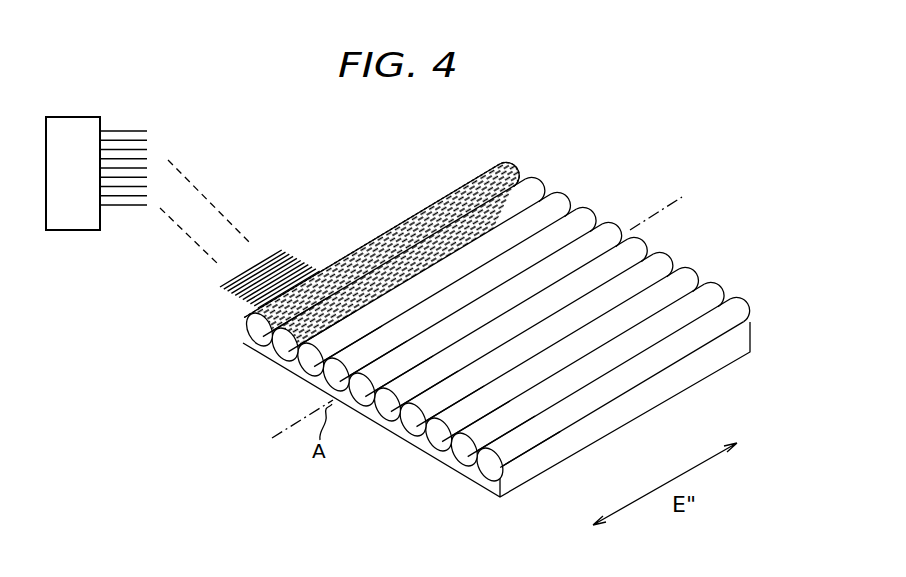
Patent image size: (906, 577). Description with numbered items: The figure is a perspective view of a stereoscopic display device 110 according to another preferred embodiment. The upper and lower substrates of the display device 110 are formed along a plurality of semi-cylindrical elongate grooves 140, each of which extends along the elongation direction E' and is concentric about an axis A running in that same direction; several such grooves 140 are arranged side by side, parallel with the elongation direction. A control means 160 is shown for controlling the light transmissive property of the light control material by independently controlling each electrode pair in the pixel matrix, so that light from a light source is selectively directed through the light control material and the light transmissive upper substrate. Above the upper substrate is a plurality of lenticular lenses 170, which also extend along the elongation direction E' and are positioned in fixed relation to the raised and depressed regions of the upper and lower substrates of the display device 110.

The stereoscopic display device 110 is at (350, 208).
The semi-cylindrical elongate grooves 140 is at (300, 371).
The control means 160 is at (77, 218).
The lenticular lenses 170 is at (707, 289).